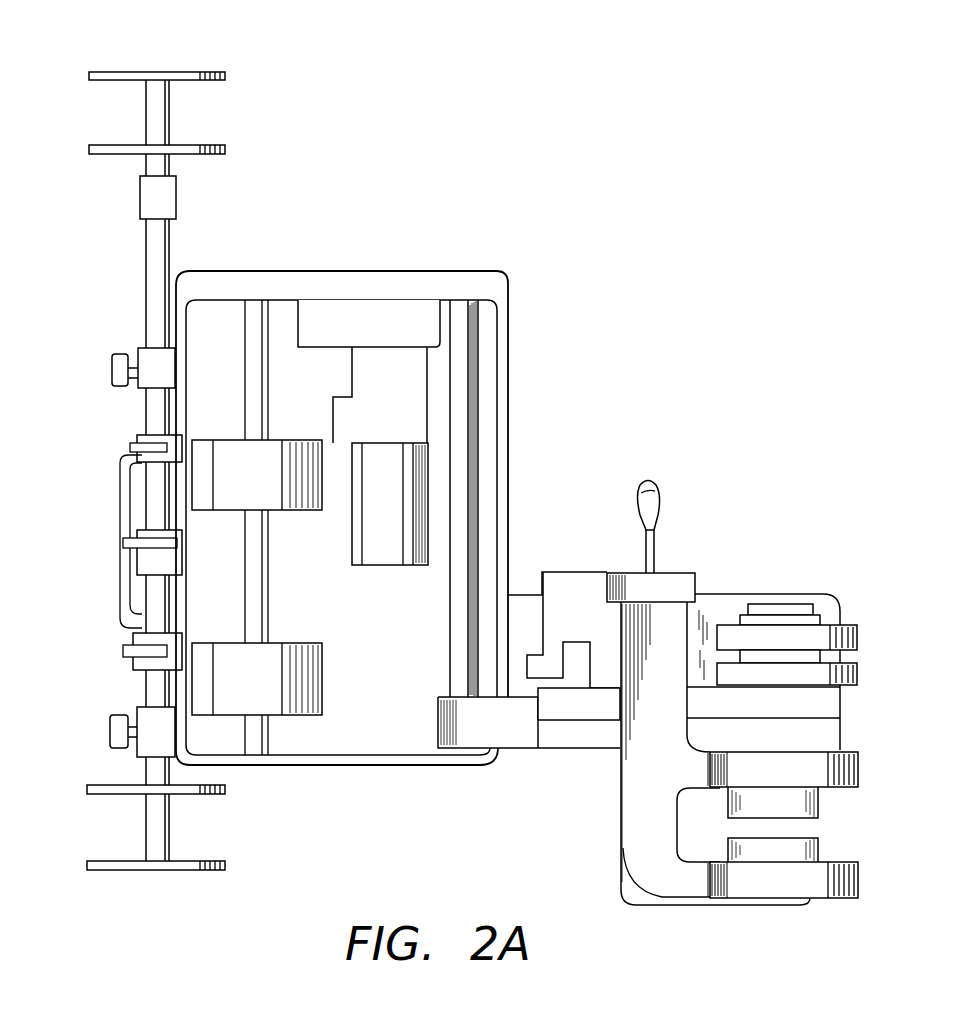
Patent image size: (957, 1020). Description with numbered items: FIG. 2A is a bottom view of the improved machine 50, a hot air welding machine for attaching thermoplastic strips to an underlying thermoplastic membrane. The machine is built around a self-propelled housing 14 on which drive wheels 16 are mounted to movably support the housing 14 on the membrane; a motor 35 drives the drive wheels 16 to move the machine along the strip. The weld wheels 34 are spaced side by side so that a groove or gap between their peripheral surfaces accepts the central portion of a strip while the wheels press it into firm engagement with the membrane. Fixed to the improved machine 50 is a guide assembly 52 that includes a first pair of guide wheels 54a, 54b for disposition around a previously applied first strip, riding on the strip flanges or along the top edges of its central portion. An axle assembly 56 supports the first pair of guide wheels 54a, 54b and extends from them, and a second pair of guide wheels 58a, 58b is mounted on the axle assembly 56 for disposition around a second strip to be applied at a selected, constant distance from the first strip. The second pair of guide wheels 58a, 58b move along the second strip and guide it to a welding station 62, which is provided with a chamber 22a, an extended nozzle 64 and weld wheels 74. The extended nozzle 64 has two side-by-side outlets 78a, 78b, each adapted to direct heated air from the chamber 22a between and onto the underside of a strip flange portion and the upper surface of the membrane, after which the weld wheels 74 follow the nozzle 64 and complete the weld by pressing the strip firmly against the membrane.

The housing 14 is at (440, 270).
The drive wheels 16 is at (213, 488).
The chamber 22a is at (681, 573).
The weld wheels 34 is at (860, 672).
The motor 35 is at (397, 522).
The improved machine 50 is at (682, 308).
The guide assembly 52 is at (113, 471).
The first guide wheel 54a is at (222, 70).
The first guide wheel 54b is at (222, 145).
The axle assembly 56 is at (150, 262).
The second guide wheel 58a is at (212, 796).
The second guide wheel 58b is at (212, 872).
The welding station 62 is at (738, 766).
The extended nozzle 64 is at (643, 815).
The weld wheels 74 is at (860, 772).
The nozzle outlet 78a is at (700, 767).
The nozzle outlet 78b is at (703, 878).